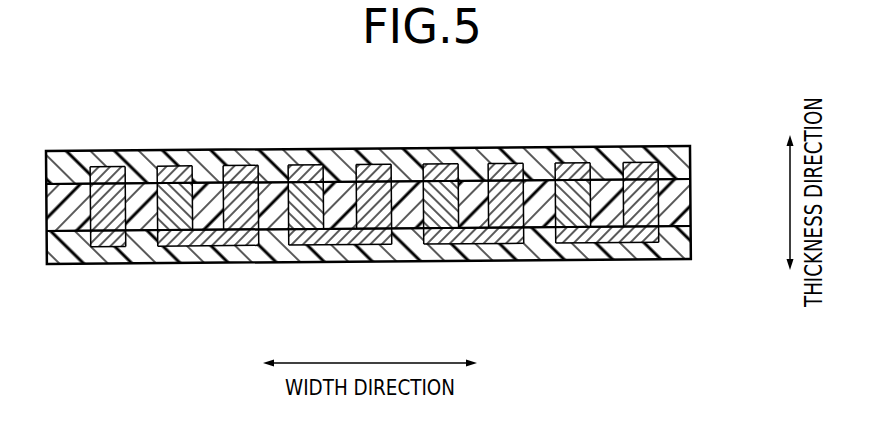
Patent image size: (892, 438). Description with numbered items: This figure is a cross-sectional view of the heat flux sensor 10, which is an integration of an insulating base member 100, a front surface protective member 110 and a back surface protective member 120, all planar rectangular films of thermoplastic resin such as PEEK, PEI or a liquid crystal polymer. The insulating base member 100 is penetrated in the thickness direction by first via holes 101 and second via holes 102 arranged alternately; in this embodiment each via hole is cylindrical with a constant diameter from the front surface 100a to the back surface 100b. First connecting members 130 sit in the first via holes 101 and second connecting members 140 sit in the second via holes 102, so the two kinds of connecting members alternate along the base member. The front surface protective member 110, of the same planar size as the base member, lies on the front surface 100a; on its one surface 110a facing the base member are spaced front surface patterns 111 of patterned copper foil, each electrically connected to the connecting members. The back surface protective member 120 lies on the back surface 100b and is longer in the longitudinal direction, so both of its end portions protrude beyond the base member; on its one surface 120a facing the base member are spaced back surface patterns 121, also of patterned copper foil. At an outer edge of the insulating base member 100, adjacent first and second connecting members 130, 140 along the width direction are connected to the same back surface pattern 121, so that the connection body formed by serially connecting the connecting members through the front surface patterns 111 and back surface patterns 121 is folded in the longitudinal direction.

The heat flux sensor 10 is at (402, 220).
The insulating base member 100 is at (683, 207).
The front surface 100a is at (55, 178).
The back surface 100b is at (80, 231).
The first via holes 101 is at (647, 210).
The second via holes 102 is at (578, 212).
The front surface protective member 110 is at (686, 160).
The one surface of the front surface protective member 110a is at (92, 187).
The front surface patterns 111 is at (636, 147).
The back surface protective member 120 is at (680, 237).
The one surface of the back surface protective member 120a is at (113, 230).
The back surface patterns 121 is at (600, 243).
The first connecting members 130 is at (641, 228).
The second connecting members 140 is at (559, 238).